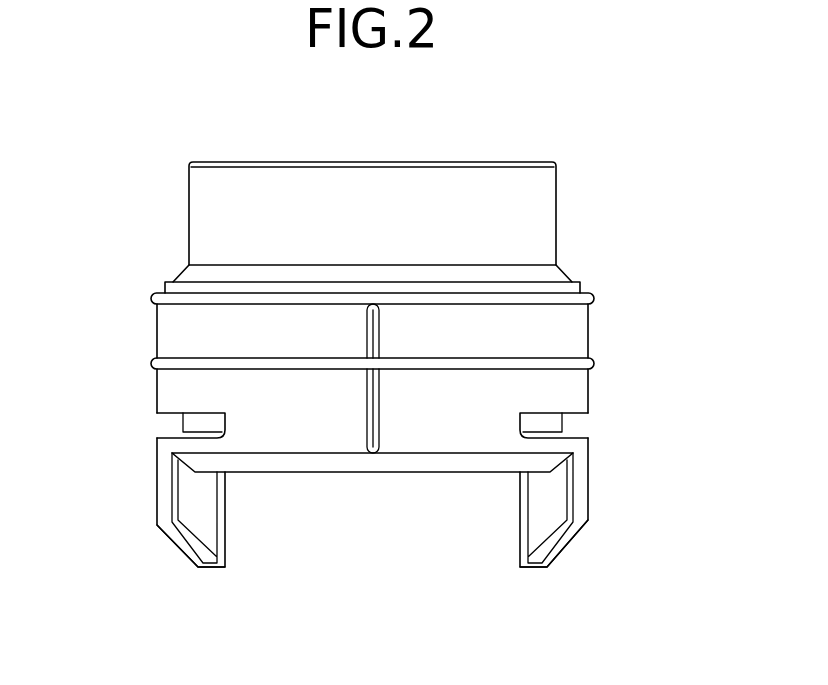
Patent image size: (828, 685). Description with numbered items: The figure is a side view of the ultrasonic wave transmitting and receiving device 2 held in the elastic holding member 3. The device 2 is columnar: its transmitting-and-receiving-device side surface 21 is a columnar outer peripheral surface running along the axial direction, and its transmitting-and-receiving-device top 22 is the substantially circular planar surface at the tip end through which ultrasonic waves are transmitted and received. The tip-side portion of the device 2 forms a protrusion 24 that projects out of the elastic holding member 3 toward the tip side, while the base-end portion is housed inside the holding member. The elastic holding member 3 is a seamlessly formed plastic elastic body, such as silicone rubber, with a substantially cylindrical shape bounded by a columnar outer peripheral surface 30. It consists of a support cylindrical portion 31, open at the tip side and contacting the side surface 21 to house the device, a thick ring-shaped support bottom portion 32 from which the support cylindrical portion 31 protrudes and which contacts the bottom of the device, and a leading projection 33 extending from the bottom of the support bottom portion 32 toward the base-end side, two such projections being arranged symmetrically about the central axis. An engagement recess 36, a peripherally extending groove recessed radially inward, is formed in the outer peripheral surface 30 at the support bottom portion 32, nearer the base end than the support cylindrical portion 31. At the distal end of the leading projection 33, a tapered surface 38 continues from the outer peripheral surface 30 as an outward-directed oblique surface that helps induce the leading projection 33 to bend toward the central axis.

The ultrasonic wave transmitting and receiving device 2 is at (379, 176).
The transmitting-and-receiving-device side surface 21 is at (557, 178).
The transmitting-and-receiving-device top 22 is at (495, 161).
The protrusion 24 is at (530, 213).
The elastic holding member 3 is at (373, 424).
The outer peripheral surface 30 is at (373, 443).
The support cylindrical portion 31 is at (572, 318).
The support bottom portion 32 is at (568, 388).
The engagement recess 36 is at (572, 422).
The leading projection 33 is at (582, 490).
The tapered surface 38 is at (572, 547).